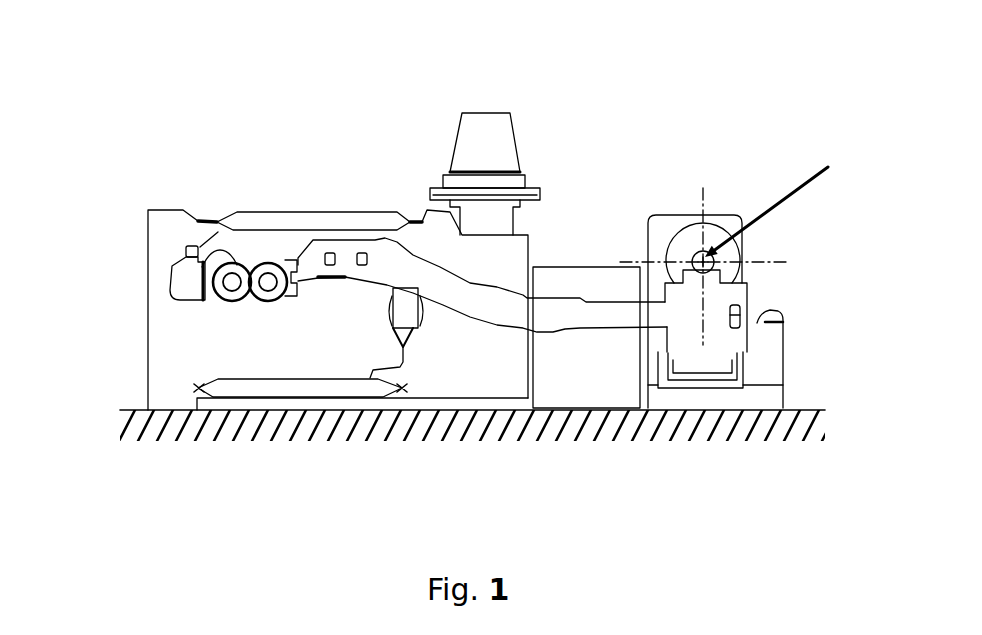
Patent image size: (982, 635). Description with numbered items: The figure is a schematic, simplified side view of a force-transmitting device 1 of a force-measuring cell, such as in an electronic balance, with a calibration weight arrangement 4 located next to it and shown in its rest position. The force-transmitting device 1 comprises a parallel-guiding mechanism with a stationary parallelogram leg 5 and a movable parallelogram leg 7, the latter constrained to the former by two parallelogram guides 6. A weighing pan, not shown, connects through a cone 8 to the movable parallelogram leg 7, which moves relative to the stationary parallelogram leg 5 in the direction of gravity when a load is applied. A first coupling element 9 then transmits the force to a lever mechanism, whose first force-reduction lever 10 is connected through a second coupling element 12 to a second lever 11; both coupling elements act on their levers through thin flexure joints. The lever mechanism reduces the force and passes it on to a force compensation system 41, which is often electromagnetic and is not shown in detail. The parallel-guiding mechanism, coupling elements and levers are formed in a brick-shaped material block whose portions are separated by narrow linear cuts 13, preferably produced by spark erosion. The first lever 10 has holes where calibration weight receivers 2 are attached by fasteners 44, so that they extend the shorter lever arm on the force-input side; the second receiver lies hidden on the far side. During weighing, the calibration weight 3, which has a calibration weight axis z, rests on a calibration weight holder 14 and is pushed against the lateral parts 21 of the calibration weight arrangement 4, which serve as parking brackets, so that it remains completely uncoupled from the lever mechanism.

The force-transmitting device 1 is at (153, 134).
The calibration weight receivers 2 is at (590, 308).
The calibration weight 3 is at (718, 258).
The calibration weight arrangement 4 is at (764, 179).
The stationary parallelogram leg 5 is at (181, 339).
The parallelogram guides 6 is at (273, 222).
The movable parallelogram leg 7 is at (479, 354).
The cone 8 is at (485, 132).
The first coupling element 9 is at (413, 318).
The first force-reduction lever 10 is at (278, 273).
The second lever 11 is at (290, 295).
The second coupling element 12 is at (200, 277).
The narrow linear cuts 13 is at (238, 220).
The calibration weight holder 14 is at (740, 297).
The lateral parts 21 is at (670, 213).
The force compensation system 41 is at (590, 282).
The fasteners 44 is at (330, 252).
The calibration weight axis z is at (773, 206).